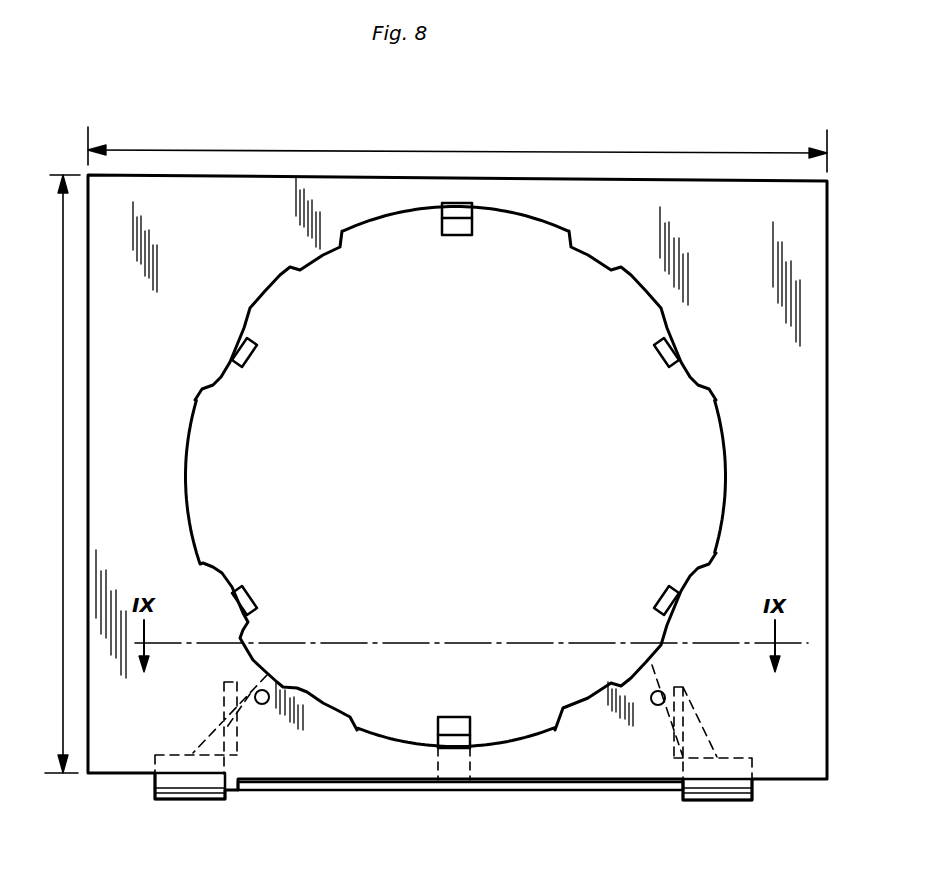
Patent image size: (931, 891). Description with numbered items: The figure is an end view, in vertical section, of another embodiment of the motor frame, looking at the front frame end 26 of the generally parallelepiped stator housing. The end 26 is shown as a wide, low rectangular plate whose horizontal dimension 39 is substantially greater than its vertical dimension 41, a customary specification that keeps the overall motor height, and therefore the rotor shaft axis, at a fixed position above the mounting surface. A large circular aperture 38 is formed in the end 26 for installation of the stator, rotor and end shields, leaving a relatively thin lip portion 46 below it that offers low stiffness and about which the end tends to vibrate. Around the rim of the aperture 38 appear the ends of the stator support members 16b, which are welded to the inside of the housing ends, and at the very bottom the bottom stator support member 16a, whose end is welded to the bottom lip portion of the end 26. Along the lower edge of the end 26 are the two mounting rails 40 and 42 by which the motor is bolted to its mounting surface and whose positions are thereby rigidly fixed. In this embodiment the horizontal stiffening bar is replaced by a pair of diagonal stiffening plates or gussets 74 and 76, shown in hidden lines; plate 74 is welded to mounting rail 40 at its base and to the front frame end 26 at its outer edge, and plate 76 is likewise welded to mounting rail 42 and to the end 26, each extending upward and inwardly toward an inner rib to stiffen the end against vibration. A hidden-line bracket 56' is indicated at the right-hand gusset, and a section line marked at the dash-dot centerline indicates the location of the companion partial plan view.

The second end 26 is at (810, 540).
The horizontal dimension 39 is at (470, 150).
The vertical dimension 41 is at (63, 497).
The lip portion 46 is at (510, 195).
The stator support member 16b is at (448, 237).
The bottom stator support member 16a is at (457, 716).
The aperture 38 is at (336, 704).
The mounting rail 40 is at (153, 782).
The mounting rail 42 is at (755, 786).
The right bracket (hidden) 56' is at (702, 722).
The diagonal stiffening plate 74 is at (270, 718).
The diagonal stiffening plate 76 is at (640, 712).